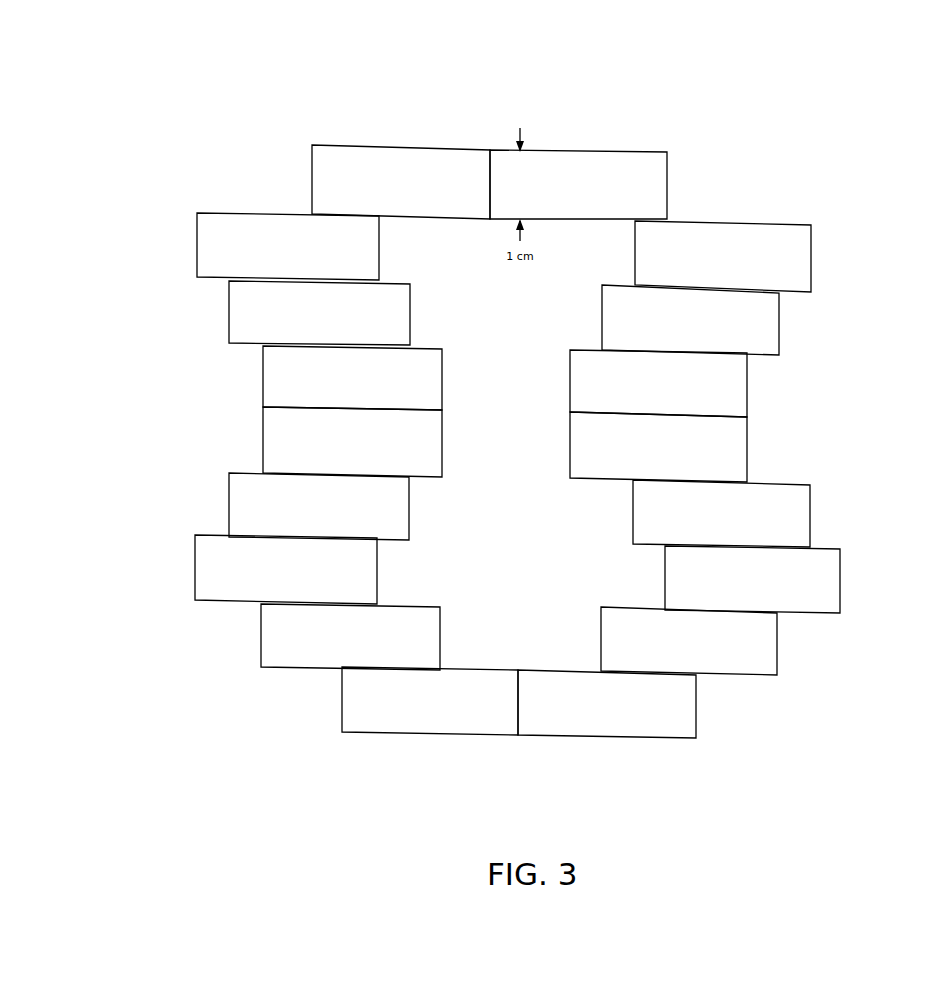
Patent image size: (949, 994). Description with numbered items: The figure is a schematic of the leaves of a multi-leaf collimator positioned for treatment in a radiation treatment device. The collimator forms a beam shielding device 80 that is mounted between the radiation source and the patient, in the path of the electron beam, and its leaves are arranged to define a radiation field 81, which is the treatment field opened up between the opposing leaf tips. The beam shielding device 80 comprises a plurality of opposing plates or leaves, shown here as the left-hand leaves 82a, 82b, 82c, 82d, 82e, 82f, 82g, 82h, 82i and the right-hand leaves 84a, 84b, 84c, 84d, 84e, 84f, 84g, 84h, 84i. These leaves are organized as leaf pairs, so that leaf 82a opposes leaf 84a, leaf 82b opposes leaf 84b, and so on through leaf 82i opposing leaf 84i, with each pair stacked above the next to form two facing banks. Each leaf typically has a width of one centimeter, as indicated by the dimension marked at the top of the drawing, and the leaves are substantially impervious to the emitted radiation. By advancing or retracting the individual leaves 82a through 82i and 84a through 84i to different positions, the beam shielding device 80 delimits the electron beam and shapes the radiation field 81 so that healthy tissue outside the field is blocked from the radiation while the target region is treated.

The beam shielding device 80 is at (540, 60).
The radiation field 81 is at (536, 668).
The leaf 82a is at (405, 147).
The leaf 82b is at (197, 243).
The leaf 82c is at (229, 310).
The leaf 82d is at (263, 374).
The leaf 82e is at (263, 440).
The leaf 82f is at (229, 503).
The leaf 82g is at (195, 568).
The leaf 82h is at (261, 633).
The leaf 82i is at (342, 715).
The leaf 84a is at (667, 152).
The leaf 84b is at (811, 240).
The leaf 84c is at (779, 307).
The leaf 84d is at (747, 371).
The leaf 84e is at (747, 432).
The leaf 84f is at (810, 500).
The leaf 84g is at (840, 565).
The leaf 84h is at (777, 662).
The leaf 84i is at (696, 720).